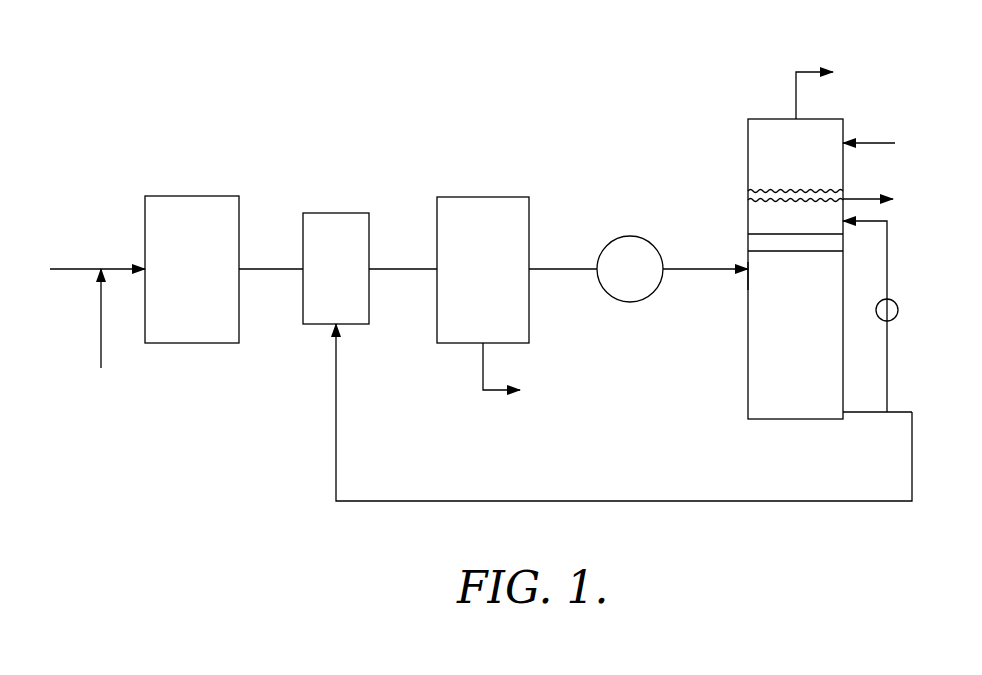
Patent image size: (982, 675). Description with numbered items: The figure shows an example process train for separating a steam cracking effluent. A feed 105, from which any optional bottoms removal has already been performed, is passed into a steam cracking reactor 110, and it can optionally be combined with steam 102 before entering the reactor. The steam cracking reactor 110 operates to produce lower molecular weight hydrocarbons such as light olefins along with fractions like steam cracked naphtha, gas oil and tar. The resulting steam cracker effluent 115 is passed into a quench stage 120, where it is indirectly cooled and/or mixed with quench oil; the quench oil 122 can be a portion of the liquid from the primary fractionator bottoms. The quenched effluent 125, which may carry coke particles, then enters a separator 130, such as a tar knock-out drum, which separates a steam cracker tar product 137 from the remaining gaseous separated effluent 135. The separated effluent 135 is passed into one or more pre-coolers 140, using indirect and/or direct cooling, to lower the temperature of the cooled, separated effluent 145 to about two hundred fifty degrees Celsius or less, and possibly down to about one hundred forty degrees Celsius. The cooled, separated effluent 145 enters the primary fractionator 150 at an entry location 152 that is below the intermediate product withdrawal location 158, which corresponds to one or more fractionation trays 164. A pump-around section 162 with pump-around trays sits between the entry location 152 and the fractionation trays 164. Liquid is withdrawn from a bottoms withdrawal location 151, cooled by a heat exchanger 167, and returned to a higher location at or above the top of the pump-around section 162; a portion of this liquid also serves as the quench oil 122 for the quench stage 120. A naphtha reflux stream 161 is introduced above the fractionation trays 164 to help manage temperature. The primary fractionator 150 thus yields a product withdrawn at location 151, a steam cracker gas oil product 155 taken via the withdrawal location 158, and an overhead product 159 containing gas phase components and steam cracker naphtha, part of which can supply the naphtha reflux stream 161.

The steam 102 is at (101, 322).
The feed 105 is at (88, 267).
The steam cracking reactor 110 is at (192, 269).
The steam cracker effluent 115 is at (274, 267).
The quench stage 120 is at (336, 268).
The quench oil 122 is at (912, 446).
The quenched effluent 125 is at (406, 267).
The separator 130 is at (483, 270).
The separated effluent 135 is at (569, 267).
The steam cracker tar product 137 is at (492, 395).
The pre-coolers 140 is at (630, 269).
The cooled, separated effluent 145 is at (708, 267).
The primary fractionator 150 is at (757, 119).
The withdrawal location 151 is at (865, 413).
The entry location 152 is at (748, 276).
The steam cracker gas oil product 155 is at (879, 204).
The intermediate product withdrawal location 158 is at (845, 197).
The overhead product 159 is at (810, 67).
The naphtha reflux stream 161 is at (878, 143).
The pump-around section 162 is at (843, 236).
The fractionation trays 164 is at (748, 193).
The heat exchanger 167 is at (898, 310).